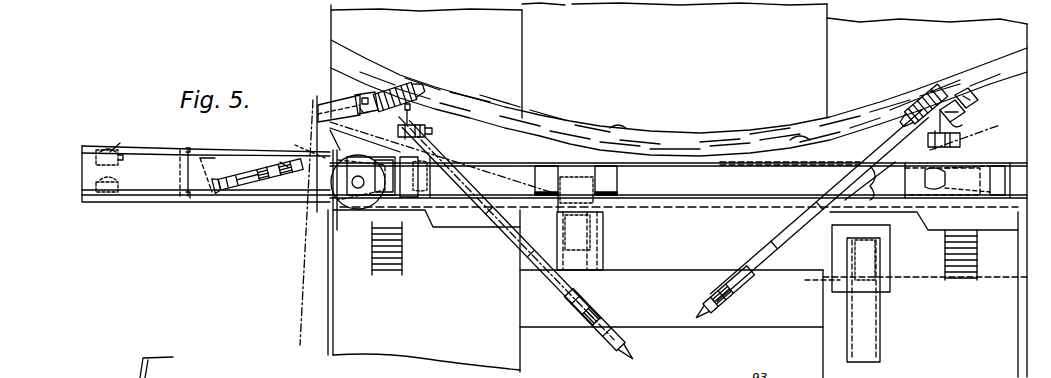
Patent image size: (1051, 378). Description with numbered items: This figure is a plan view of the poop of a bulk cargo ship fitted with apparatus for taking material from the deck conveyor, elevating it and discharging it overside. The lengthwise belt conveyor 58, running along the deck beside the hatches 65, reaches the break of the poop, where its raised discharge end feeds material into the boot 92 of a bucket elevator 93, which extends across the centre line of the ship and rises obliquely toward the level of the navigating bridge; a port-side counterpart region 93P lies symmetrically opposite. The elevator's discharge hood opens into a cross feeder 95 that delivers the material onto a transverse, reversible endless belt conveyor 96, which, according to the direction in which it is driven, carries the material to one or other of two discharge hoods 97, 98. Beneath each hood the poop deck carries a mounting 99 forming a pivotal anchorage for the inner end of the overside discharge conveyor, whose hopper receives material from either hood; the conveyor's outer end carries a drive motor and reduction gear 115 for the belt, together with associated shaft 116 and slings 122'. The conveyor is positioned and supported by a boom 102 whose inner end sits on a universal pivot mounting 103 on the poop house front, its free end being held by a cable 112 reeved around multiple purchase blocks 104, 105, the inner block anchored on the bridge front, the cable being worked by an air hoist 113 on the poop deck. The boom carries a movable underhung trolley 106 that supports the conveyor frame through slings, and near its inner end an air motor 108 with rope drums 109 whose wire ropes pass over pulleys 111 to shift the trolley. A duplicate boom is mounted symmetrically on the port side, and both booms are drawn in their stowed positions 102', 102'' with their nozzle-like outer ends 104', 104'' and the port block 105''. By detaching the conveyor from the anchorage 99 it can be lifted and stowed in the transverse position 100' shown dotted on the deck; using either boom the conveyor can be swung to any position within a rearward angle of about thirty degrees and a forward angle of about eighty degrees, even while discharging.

The lengthwise conveyor 58 is at (870, 316).
The deck 65 is at (705, 354).
The boot 92 is at (805, 281).
The bucket elevator 93 is at (705, 240).
The floor section 93P is at (176, 367).
The cross feeder 95 is at (545, 170).
The transverse reversible endless belt conveyor 96 is at (680, 180).
The discharge hood 97 is at (436, 160).
The discharge hood 98 is at (557, 238).
The mounting 99 is at (337, 202).
The transverse stowage position of overside discharge conveyor 100' is at (925, 252).
The boom 102 is at (334, 109).
The stowed position of boom 102' is at (506, 228).
The stowed position of boom 102'' is at (855, 205).
The universal pivot mounting 103 is at (967, 94).
The multiple purchase block 104 is at (258, 175).
The nozzle 104' is at (600, 324).
The nozzle 104'' is at (724, 294).
The multiple purchase block 105 is at (400, 78).
The nozzle head 105'' is at (910, 97).
The underhung trolley 106 is at (282, 163).
The air motor 108 is at (365, 113).
The rope drums 109 is at (368, 96).
The pulleys 111 is at (228, 198).
The cable 112 is at (432, 131).
The air hoist 113 is at (412, 104).
The reduction gear 115 is at (108, 196).
The shaft 116 is at (113, 147).
The rod 122' is at (191, 191).